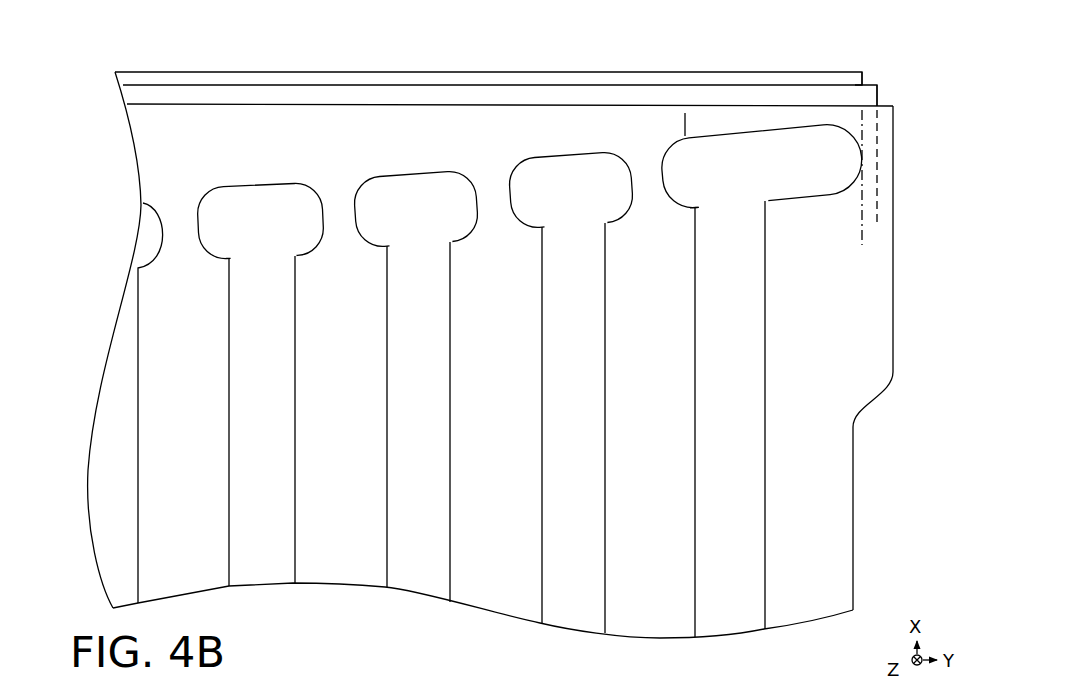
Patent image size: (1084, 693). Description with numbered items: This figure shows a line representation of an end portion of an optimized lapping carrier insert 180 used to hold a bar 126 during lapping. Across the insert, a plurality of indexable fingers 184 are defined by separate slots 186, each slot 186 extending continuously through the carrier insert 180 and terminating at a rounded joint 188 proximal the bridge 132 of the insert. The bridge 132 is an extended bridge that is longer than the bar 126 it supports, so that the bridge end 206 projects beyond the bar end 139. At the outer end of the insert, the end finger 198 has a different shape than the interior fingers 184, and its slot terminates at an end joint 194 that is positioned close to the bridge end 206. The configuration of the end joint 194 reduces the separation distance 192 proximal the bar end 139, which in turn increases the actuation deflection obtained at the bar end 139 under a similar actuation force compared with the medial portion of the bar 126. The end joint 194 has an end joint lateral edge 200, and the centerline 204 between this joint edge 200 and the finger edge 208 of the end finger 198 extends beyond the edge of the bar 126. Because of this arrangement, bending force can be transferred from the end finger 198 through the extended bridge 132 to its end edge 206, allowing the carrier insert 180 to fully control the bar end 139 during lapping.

The carrier insert 180 is at (146, 48).
The bar 126 is at (406, 64).
The bridge 132 is at (266, 106).
The bar end 139 is at (847, 61).
The bridge end 206 is at (882, 93).
The finger edge 208 is at (897, 307).
The end finger 198 is at (826, 607).
The indexable fingers 184 is at (200, 569).
The slots 186 is at (280, 405).
The joint 188 is at (280, 235).
The end joint lateral edge 200 is at (855, 162).
The end joint 194 is at (687, 210).
The separation distance 192 is at (685, 111).
The centerline 204 is at (875, 237).